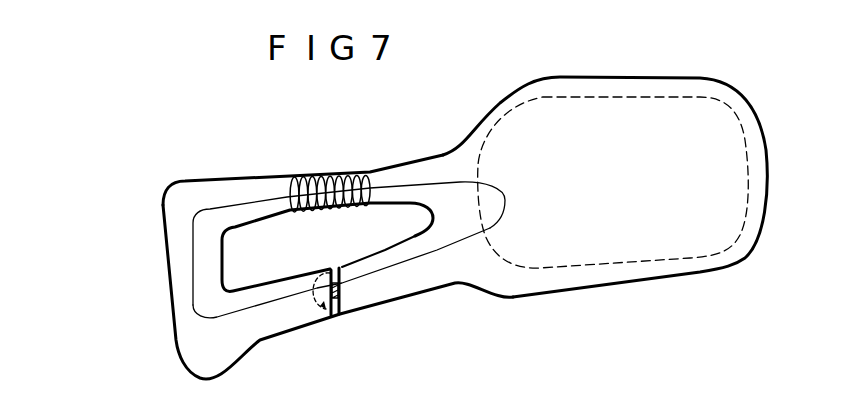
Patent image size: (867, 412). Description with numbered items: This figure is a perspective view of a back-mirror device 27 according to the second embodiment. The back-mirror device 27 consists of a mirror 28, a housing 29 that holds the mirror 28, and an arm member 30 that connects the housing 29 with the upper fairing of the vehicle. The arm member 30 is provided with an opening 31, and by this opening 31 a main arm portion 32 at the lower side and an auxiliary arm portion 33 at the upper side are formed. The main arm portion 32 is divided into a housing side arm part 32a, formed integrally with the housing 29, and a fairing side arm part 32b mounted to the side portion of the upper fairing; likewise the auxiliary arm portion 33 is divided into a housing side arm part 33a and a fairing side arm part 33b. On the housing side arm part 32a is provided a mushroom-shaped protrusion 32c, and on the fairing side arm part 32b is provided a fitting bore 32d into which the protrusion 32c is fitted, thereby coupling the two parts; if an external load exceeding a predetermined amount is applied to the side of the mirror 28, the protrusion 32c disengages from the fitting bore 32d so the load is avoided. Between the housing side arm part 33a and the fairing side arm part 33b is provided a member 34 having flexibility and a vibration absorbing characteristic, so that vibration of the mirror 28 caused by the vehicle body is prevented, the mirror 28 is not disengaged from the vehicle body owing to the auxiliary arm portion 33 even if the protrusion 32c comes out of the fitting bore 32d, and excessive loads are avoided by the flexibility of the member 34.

The back-mirror device 27 is at (468, 318).
The mirror 28 is at (717, 230).
The housing 29 is at (665, 267).
The arm member 30 is at (78, 115).
The opening 31 is at (311, 240).
The main arm portion 32 is at (119, 232).
The housing side arm part 32a is at (363, 268).
The fairing side arm part 32b is at (267, 298).
The mushroom-shaped protrusion 32c is at (333, 312).
The fitting bore 32d is at (323, 312).
The auxiliary arm portion 33 is at (119, 120).
The housing side arm part 33a is at (410, 175).
The fairing side arm part 33b is at (253, 187).
The member having flexibility and vibration absorbing characteristic 34 is at (337, 207).